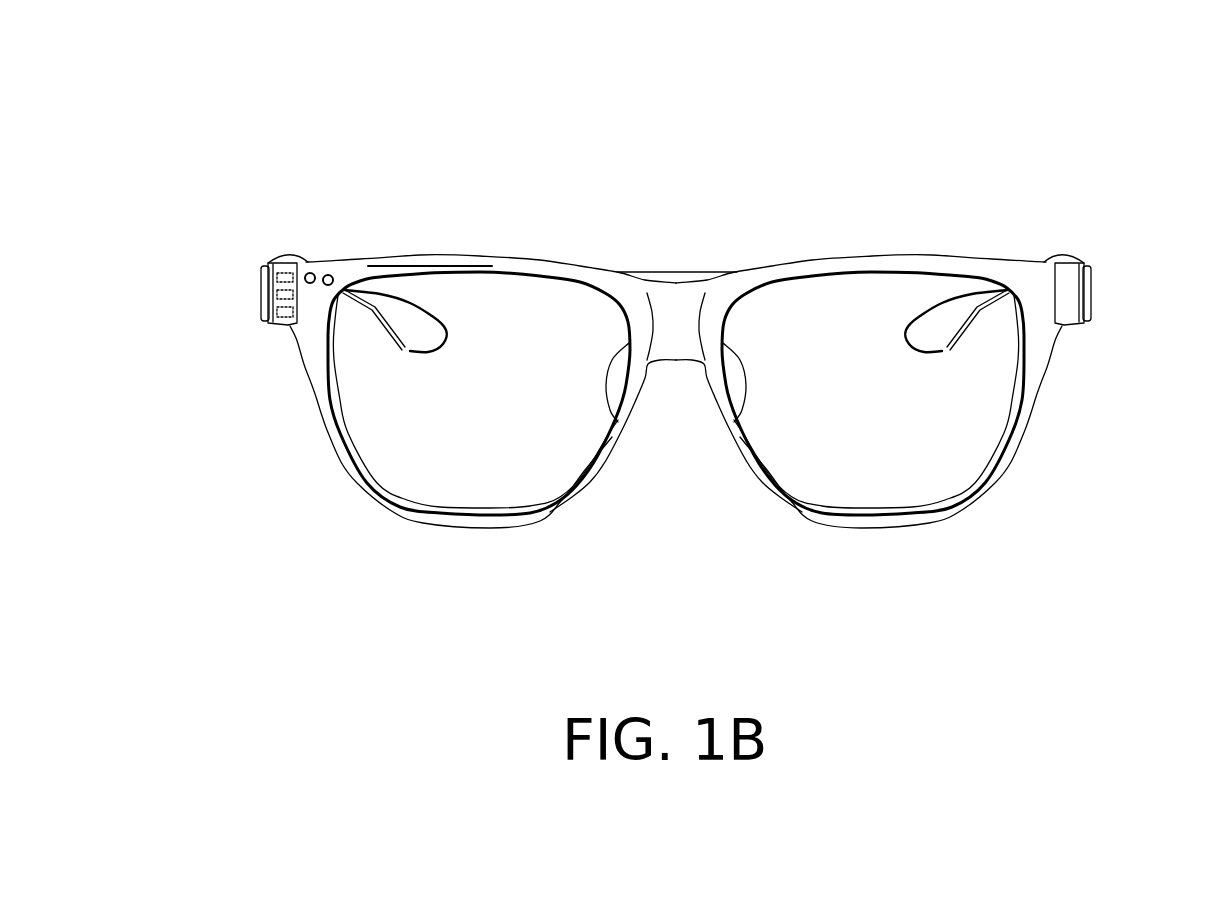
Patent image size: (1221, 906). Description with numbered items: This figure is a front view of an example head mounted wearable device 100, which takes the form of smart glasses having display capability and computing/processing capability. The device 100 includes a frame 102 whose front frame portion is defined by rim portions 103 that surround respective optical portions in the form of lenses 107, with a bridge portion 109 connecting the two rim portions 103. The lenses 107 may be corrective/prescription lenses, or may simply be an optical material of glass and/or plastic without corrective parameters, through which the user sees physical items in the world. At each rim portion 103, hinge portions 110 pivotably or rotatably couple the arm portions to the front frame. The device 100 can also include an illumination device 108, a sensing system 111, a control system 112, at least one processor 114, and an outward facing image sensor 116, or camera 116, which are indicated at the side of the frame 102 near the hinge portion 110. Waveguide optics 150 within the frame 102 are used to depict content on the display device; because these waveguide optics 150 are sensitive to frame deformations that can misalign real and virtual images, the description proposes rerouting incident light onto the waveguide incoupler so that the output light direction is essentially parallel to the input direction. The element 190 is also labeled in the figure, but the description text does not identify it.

The head mounted wearable device 100 is at (651, 349).
The frame 102 is at (608, 333).
The rim portions 103 is at (327, 430).
The lenses 107 is at (444, 453).
The illumination device 108 is at (313, 273).
The bridge portion 109 is at (673, 305).
The hinge portions 110 is at (273, 243).
The sensing system 111 is at (270, 279).
The control system 112 is at (270, 300).
The processor 114 is at (270, 320).
The outward facing image sensor 116 is at (331, 274).
The waveguide optics 150 is at (470, 266).
The electronic components 190 is at (265, 372).